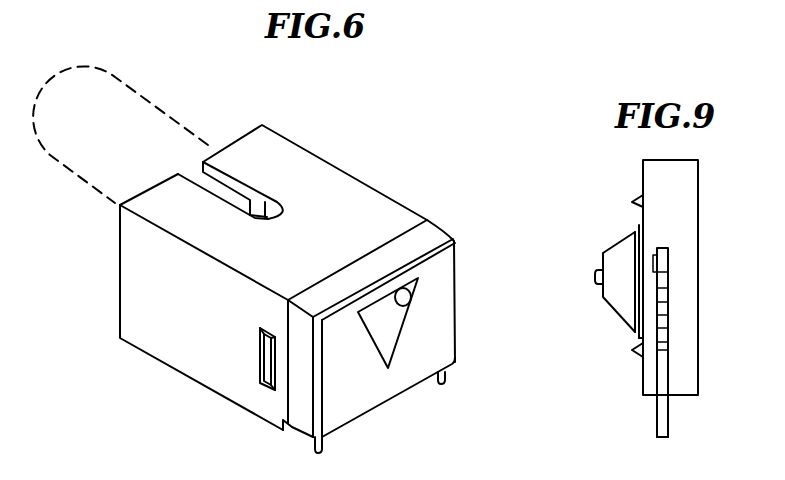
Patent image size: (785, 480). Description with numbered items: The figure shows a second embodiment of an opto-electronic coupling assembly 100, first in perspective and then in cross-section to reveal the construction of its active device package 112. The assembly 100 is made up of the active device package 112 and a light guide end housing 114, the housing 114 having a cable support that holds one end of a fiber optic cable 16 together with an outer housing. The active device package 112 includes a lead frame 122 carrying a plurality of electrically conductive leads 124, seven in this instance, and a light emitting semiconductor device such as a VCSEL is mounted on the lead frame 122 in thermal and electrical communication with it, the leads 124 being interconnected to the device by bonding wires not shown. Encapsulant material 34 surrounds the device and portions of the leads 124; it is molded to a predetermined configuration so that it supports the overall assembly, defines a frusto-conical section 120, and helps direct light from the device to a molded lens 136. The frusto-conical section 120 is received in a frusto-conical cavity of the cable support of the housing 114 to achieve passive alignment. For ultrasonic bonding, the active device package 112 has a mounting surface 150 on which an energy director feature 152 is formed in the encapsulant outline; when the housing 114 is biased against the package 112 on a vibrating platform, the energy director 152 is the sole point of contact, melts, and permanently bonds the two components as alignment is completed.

In FIG. 6, the fiber optic cable 16 is at (147, 102).
In FIG. 6, the opto-electronic coupling assembly 100 is at (334, 131).
In FIG. 6, the light guide end housing 114 is at (388, 196).
In FIG. 6, the active device package 112 is at (459, 285).
In FIG. 9, the active device package 112 is at (704, 208).
In FIG. 6, the encapsulant material 34 is at (519, 473).
In FIG. 9, the encapsulant material 34 is at (700, 362).
In FIG. 9, the frusto-conical section 120 is at (618, 245).
In FIG. 9, the lead frame 122 is at (700, 270).
In FIG. 9, the electrically conductive leads 124 is at (670, 417).
In FIG. 9, the molded lens 136 is at (598, 278).
In FIG. 9, the mounting surface 150 is at (643, 380).
In FIG. 9, the energy director feature 152 is at (642, 352).